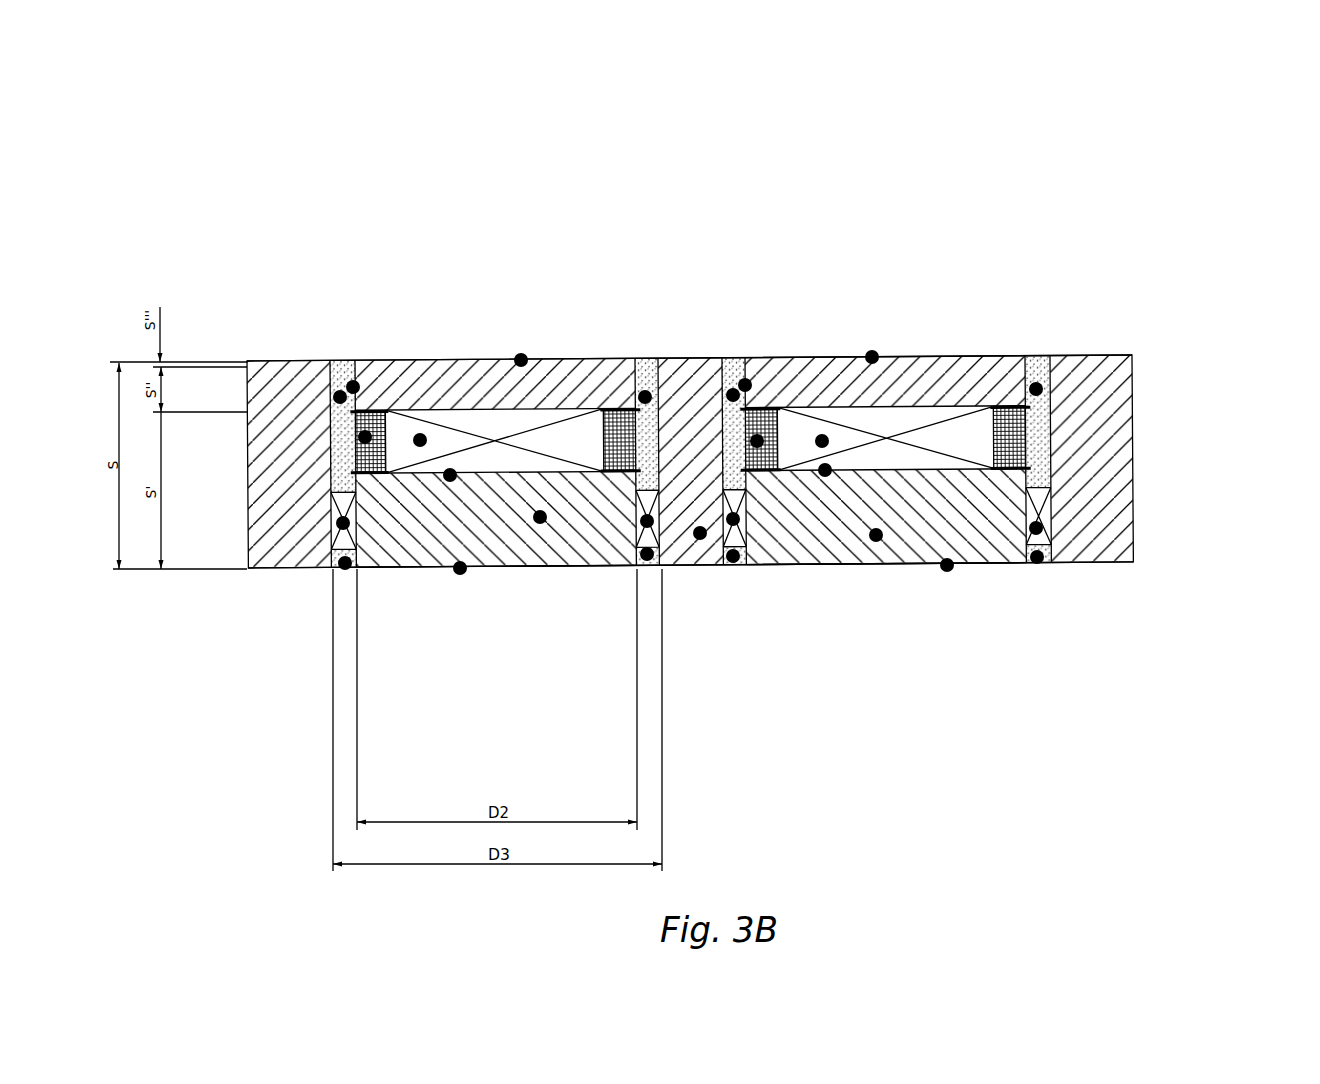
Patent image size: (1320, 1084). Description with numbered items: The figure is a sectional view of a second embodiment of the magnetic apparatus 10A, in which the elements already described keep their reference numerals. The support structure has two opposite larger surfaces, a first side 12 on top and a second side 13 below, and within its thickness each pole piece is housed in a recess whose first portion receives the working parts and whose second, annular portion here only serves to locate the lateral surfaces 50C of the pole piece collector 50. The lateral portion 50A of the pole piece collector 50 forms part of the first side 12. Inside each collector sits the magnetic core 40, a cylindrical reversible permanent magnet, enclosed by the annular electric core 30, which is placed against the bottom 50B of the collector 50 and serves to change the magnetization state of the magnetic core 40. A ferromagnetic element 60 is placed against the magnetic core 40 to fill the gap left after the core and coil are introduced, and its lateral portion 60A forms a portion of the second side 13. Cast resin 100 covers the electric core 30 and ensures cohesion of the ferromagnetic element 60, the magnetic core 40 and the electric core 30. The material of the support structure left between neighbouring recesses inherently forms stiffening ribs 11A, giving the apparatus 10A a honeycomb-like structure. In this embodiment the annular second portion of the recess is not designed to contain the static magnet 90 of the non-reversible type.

The magnetic apparatus 10A is at (1190, 252).
The stiffening ribs 11A is at (700, 533).
The first side 12 is at (1081, 357).
The second side 13 is at (1080, 566).
The electric core 30 is at (365, 437).
The magnetic core 40 is at (420, 440).
The pole piece collector 50 is at (455, 387).
The lateral portion of the pole piece collector 50A is at (521, 360).
The bottom of the first collector 50B is at (450, 475).
The lateral surfaces of the first pole piece collector 50C is at (353, 387).
The ferromagnetic element 60 is at (540, 517).
The lateral portion of the ferromagnetic element 60A is at (460, 568).
The static magnet 90 is at (343, 523).
The resin 100 is at (340, 397).